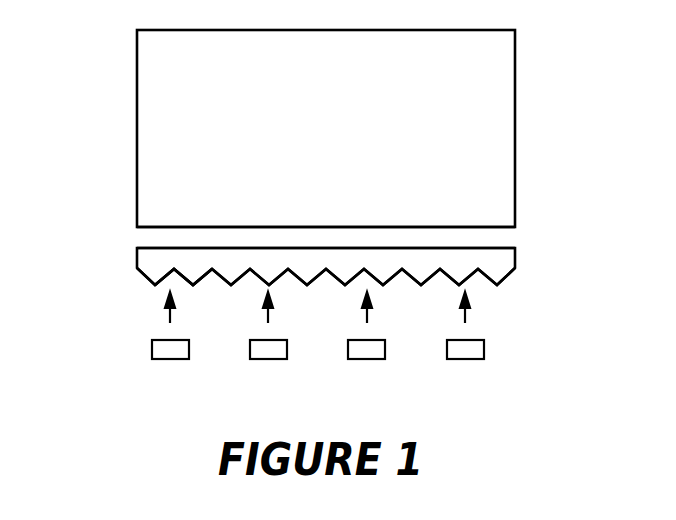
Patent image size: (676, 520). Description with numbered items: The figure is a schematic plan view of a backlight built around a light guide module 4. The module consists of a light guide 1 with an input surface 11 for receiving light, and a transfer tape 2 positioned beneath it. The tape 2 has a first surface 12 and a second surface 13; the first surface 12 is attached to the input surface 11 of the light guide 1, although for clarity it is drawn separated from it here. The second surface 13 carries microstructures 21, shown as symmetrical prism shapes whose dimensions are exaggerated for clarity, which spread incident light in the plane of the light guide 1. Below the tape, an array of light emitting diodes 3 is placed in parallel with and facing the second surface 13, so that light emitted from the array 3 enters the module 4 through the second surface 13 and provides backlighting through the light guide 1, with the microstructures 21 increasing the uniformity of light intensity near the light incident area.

The light guide 1 is at (140, 125).
The input surface 11 is at (502, 231).
The transfer tape 2 is at (140, 258).
The first surface 12 is at (502, 243).
The second surface 13 is at (500, 283).
The microstructures 21 is at (190, 273).
The array of light emitting diodes 3 is at (465, 359).
The light guide module 4 is at (105, 103).